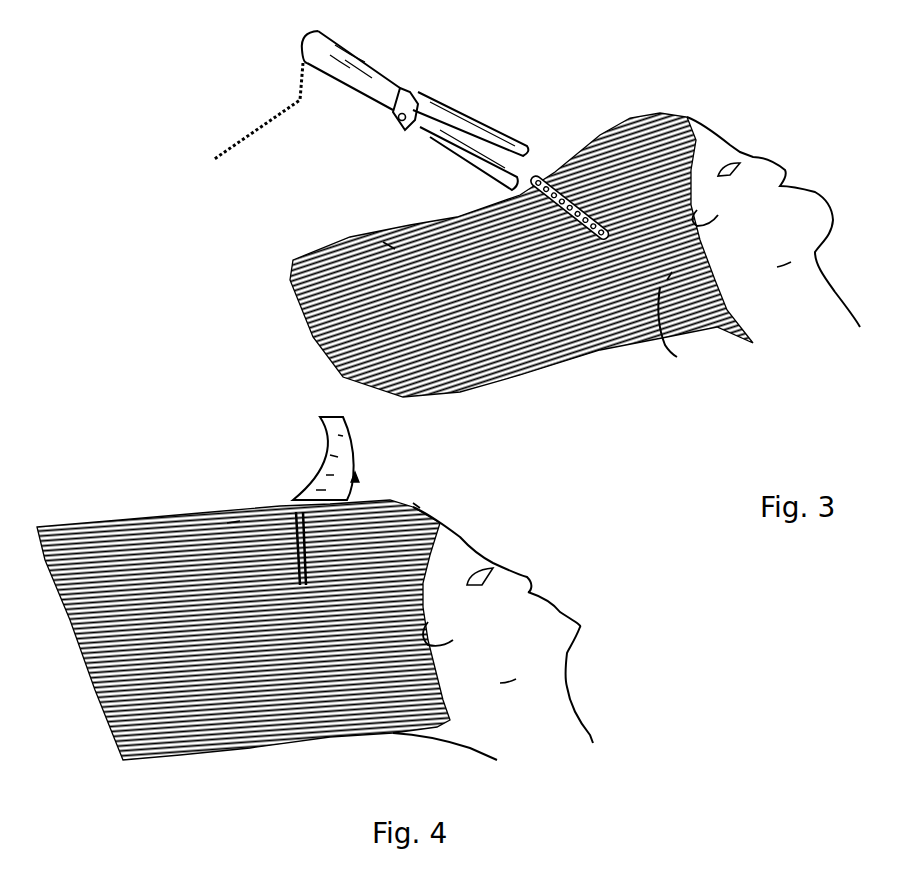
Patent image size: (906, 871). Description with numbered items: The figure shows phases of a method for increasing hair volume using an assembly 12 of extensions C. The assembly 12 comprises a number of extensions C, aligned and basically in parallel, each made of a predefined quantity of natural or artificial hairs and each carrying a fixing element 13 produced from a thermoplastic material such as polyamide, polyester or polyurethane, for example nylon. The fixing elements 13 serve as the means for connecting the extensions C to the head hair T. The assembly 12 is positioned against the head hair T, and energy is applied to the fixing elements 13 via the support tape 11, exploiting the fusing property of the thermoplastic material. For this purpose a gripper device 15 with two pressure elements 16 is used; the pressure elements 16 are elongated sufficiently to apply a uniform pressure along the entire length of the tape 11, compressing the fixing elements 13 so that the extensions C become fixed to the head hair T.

In FIG. 4, the support tape 11 is at (352, 448).
In FIG. 3, the assembly of extensions 12 is at (541, 172).
In FIG. 4, the fixing element 13 is at (293, 510).
In FIG. 3, the gripper device 15 is at (368, 70).
In FIG. 3, the pressure elements 16 is at (477, 120).
In FIG. 3, the extensions C is at (383, 242).
In FIG. 4, the extensions C is at (227, 523).
In FIG. 3, the head hair T is at (667, 280).
In FIG. 4, the head hair T is at (413, 503).